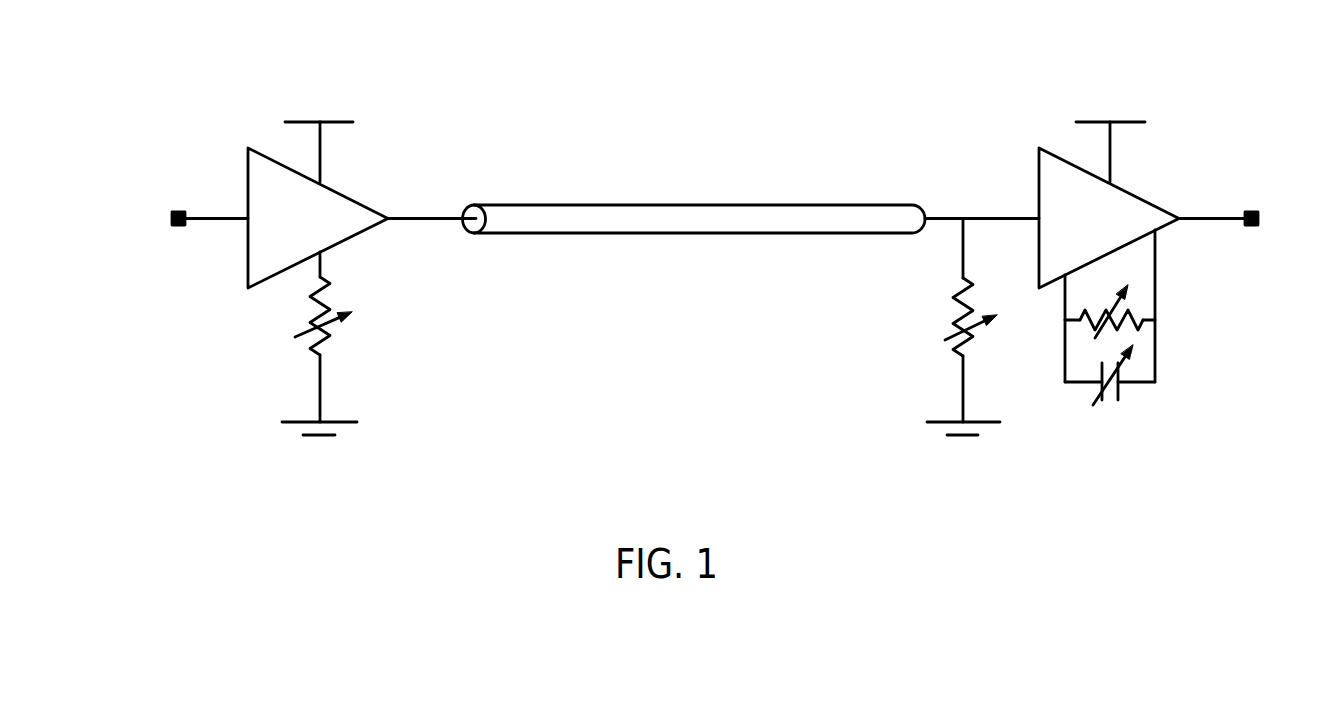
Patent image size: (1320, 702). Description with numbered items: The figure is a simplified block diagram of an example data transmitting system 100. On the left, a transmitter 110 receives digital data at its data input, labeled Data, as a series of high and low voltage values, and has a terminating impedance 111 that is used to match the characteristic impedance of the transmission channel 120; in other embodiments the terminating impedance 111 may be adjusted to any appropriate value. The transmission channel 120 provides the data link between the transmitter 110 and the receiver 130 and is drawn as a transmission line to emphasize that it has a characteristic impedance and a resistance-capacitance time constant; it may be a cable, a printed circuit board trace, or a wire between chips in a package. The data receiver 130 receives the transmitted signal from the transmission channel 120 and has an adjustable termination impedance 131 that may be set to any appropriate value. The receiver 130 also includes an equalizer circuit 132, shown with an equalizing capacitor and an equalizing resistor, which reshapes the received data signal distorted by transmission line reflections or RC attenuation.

The data transmitting system 100 is at (758, 82).
The transmitter 110 is at (357, 198).
The terminating impedance 111 is at (294, 316).
The transmission channel 120 is at (545, 203).
The receiver 130 is at (1039, 175).
The adjustable termination impedance 131 is at (929, 356).
The equalizer circuit 132 is at (1142, 399).